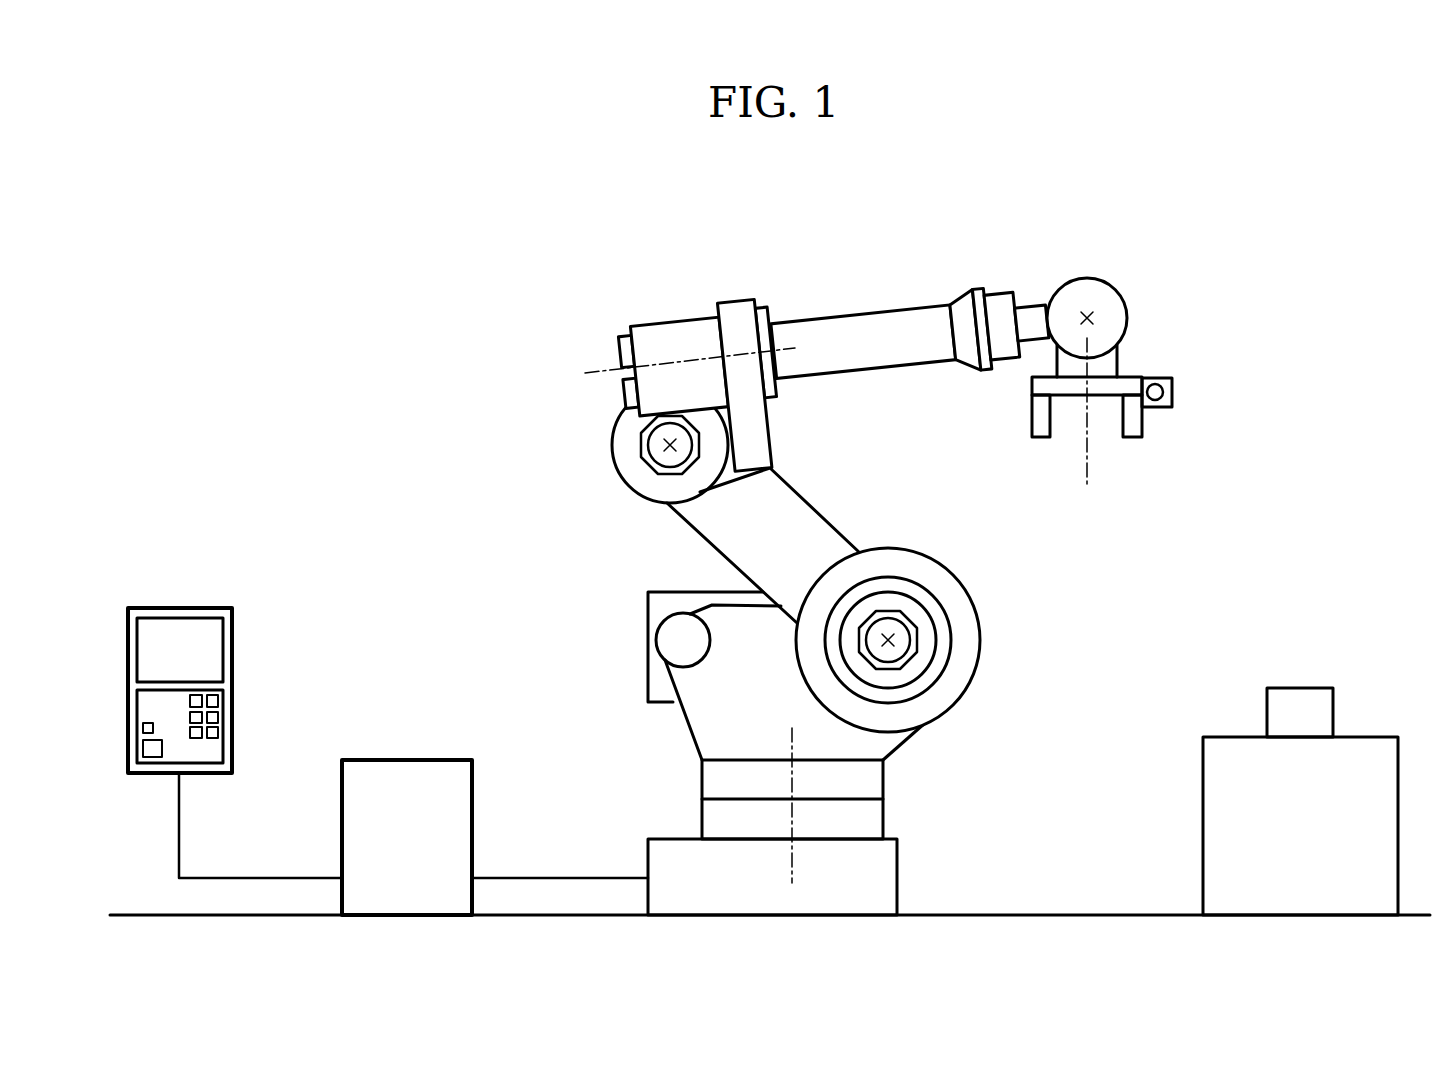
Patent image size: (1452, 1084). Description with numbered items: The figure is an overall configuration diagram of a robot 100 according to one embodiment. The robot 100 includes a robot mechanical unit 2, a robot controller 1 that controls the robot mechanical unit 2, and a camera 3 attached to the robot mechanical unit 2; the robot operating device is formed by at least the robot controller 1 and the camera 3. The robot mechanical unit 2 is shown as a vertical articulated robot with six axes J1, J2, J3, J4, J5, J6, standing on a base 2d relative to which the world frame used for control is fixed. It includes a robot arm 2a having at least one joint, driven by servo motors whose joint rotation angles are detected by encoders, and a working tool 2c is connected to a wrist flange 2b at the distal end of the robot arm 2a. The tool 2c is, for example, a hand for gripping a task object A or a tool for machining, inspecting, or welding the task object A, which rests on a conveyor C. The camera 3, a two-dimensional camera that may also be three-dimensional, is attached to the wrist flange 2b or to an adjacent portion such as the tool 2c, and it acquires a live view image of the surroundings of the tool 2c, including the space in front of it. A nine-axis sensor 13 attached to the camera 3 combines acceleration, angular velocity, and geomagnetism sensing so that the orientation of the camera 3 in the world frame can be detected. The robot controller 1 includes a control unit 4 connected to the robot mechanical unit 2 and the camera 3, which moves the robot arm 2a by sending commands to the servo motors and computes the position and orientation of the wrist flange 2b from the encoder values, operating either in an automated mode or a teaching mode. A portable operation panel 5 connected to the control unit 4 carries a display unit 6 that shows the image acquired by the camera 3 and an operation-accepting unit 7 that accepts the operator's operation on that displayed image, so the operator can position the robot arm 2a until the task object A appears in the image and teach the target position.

The robot 100 is at (422, 333).
The robot controller 1 is at (452, 620).
The robot mechanical unit 2 is at (941, 249).
The robot arm 2a is at (860, 313).
The wrist flange 2b is at (1070, 378).
The working tool 2c is at (1032, 420).
The base 2d is at (897, 873).
The camera 3 is at (1172, 393).
The 9-axis sensor 13 is at (1158, 381).
The control unit 4 is at (403, 760).
The portable operation panel 5 is at (232, 685).
The display unit 6 is at (178, 617).
The operation-accepting unit 7 is at (180, 638).
The axis J1 is at (791, 790).
The axis J2 is at (890, 640).
The axis J3 is at (668, 445).
The axis J4 is at (670, 371).
The axis J5 is at (1087, 318).
The axis J6 is at (1084, 430).
The task object A is at (1300, 688).
The conveyor C is at (1203, 808).